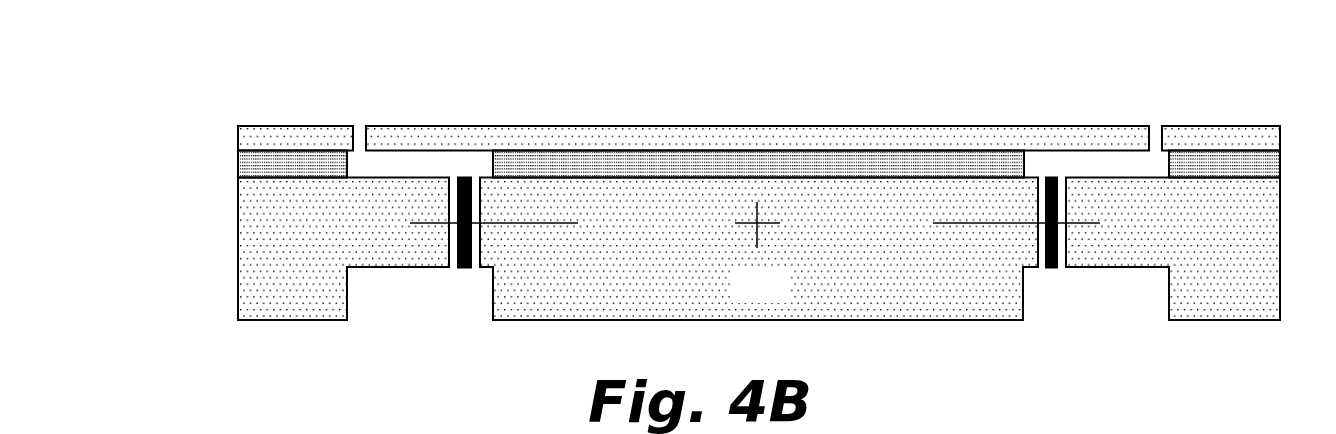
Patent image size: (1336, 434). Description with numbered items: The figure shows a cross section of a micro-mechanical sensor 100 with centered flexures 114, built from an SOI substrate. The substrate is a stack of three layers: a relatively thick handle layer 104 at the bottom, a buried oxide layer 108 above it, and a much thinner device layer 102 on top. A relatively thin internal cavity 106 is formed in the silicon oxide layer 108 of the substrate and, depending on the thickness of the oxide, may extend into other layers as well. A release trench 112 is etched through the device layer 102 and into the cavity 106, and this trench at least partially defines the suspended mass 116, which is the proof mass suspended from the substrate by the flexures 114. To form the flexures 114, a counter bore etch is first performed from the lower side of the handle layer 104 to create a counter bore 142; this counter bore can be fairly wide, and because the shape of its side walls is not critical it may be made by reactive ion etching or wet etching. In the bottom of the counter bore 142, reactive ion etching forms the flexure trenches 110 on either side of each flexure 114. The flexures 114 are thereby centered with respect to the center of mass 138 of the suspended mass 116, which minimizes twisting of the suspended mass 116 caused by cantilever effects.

The semiconductor device 100 is at (1230, 96).
The device layer 102 is at (248, 133).
The handle layer 104 is at (250, 247).
The internal cavity 106 is at (443, 167).
The buried oxide layer 108 is at (248, 163).
The flexure trench 110 is at (452, 270).
The release trench 112 is at (361, 125).
The flexure 114 is at (463, 270).
The suspended mass 116 is at (781, 296).
The center of mass 138 is at (757, 223).
The counter bore 142 is at (360, 320).